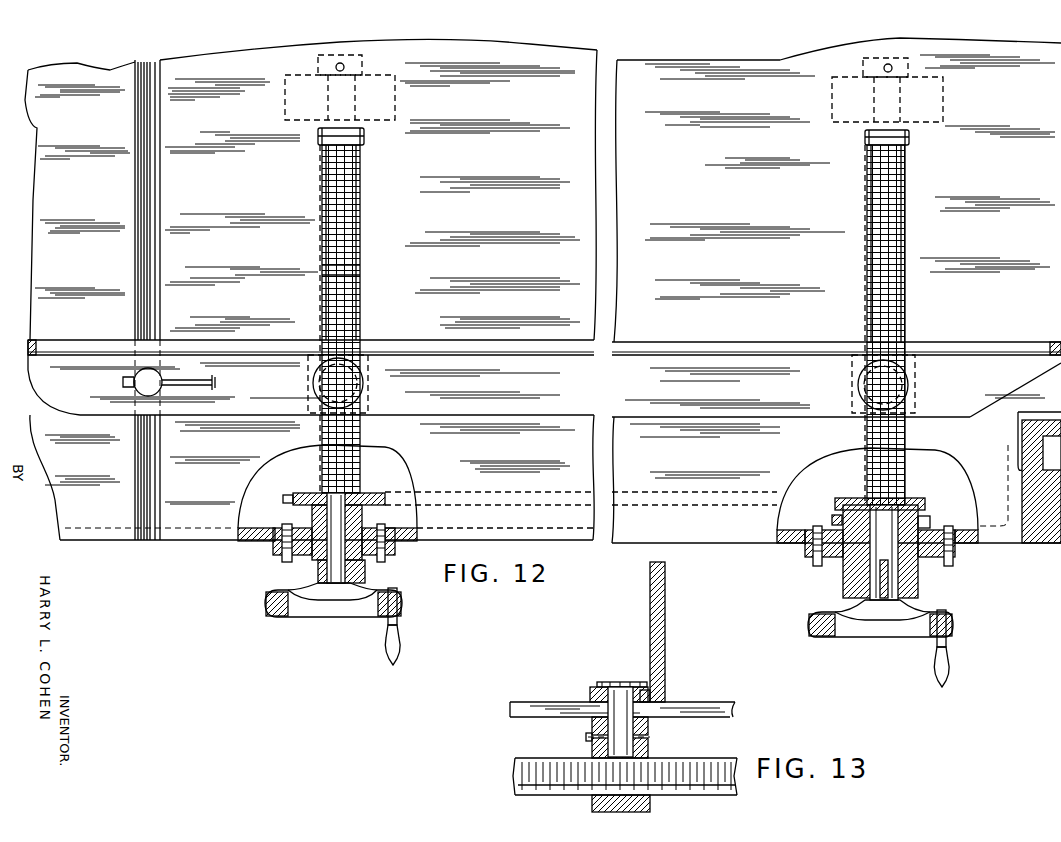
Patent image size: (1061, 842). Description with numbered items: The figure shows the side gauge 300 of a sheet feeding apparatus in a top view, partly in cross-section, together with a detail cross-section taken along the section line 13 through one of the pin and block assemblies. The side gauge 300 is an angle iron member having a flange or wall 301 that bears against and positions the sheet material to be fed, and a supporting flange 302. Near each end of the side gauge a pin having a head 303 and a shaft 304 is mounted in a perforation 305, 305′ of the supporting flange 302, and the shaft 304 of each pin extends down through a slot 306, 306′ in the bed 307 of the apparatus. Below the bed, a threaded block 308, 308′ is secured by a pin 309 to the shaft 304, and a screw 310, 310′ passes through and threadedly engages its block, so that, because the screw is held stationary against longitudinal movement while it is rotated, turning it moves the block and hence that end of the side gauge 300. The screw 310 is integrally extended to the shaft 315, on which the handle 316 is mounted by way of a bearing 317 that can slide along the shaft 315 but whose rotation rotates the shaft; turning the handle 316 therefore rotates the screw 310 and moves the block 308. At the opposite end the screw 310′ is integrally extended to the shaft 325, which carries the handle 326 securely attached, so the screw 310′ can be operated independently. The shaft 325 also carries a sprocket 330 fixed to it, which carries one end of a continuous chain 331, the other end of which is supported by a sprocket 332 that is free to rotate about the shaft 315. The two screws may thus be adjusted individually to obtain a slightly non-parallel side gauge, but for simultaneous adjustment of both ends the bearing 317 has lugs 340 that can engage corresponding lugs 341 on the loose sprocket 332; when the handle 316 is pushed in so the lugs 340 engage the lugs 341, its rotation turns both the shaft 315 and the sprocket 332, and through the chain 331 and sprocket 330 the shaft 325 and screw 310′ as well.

In FIG. 12, the section line 13 is at (340, 272).
In FIG. 12, the side gauge 300 is at (690, 333).
In FIG. 12, the flange or wall 301 is at (1020, 338).
In FIG. 13, the flange or wall 301 is at (665, 604).
In FIG. 12, the supporting flange 302 is at (1028, 392).
In FIG. 13, the supporting flange 302 is at (592, 688).
In FIG. 12, the head 303 is at (908, 381).
In FIG. 13, the head 303 is at (632, 683).
In FIG. 13, the shaft 304 is at (648, 727).
In FIG. 12, the perforation 305 is at (856, 378).
In FIG. 12, the perforation 305′ is at (313, 383).
In FIG. 13, the perforation 305′ is at (650, 694).
In FIG. 12, the slot 306 is at (896, 327).
In FIG. 12, the slot 306′ is at (350, 318).
In FIG. 13, the slot 306′ is at (705, 702).
In FIG. 12, the bed 307 is at (698, 198).
In FIG. 12, the threaded block 308 is at (915, 399).
In FIG. 13, the threaded block 308 is at (592, 746).
In FIG. 12, the threaded block 308′ is at (368, 392).
In FIG. 13, the pin 309 is at (588, 736).
In FIG. 12, the screw 310 is at (893, 174).
In FIG. 12, the screw 310′ is at (348, 184).
In FIG. 13, the screw 310′ is at (683, 768).
In FIG. 12, the shaft 315 is at (884, 566).
In FIG. 12, the handle 316 is at (850, 615).
In FIG. 12, the bearing 317 is at (843, 572).
In FIG. 12, the shaft 325 is at (366, 575).
In FIG. 12, the handle 326 is at (401, 643).
In FIG. 12, the sprocket 330 is at (310, 497).
In FIG. 12, the continuous chain 331 is at (400, 493).
In FIG. 12, the sprocket 332 is at (895, 498).
In FIG. 12, the lugs 340 is at (922, 527).
In FIG. 12, the lugs 341 is at (918, 516).